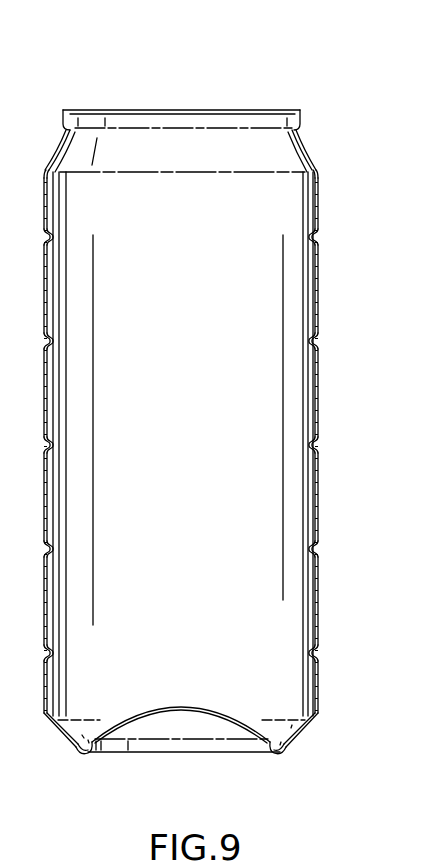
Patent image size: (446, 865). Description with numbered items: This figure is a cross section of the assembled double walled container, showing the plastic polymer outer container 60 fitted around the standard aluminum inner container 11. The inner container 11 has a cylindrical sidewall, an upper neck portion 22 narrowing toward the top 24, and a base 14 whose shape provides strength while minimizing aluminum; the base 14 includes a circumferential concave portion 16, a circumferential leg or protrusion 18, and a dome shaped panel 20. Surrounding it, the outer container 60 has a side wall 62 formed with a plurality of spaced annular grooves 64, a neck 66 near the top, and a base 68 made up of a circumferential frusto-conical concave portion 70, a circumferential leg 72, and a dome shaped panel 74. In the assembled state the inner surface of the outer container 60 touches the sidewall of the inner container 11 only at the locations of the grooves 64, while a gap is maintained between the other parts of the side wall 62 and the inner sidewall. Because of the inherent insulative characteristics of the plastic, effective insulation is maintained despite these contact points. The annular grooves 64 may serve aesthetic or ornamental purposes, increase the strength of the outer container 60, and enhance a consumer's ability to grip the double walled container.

The inner container 11 is at (352, 133).
The base 14 is at (208, 665).
The circumferential concave portion 16 is at (82, 735).
The circumferential leg 18 is at (88, 740).
The dome shaped panel 20 is at (148, 712).
The upper neck portion 22 is at (298, 140).
The top 24 is at (182, 88).
The outer container 60 is at (383, 458).
The side wall 62 is at (320, 283).
The annular grooves 64 is at (318, 237).
The neck 66 is at (52, 172).
The base 68 is at (240, 788).
The circumferential frusto-conical concave portion 70 is at (57, 724).
The circumferential leg 72 is at (84, 758).
The dome shaped panel 74 is at (205, 728).